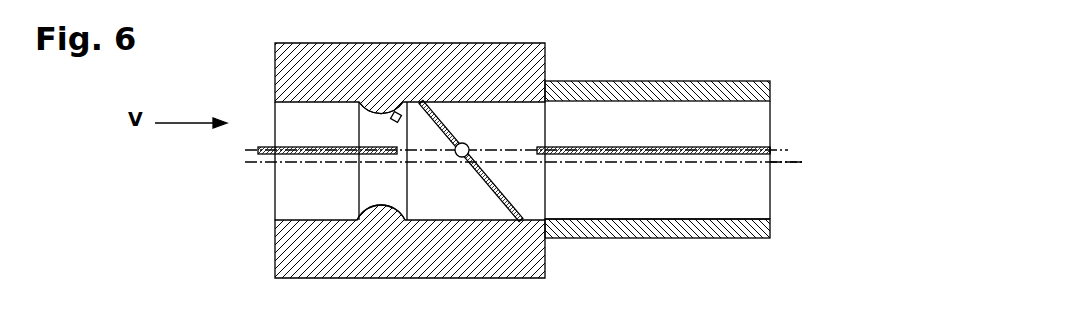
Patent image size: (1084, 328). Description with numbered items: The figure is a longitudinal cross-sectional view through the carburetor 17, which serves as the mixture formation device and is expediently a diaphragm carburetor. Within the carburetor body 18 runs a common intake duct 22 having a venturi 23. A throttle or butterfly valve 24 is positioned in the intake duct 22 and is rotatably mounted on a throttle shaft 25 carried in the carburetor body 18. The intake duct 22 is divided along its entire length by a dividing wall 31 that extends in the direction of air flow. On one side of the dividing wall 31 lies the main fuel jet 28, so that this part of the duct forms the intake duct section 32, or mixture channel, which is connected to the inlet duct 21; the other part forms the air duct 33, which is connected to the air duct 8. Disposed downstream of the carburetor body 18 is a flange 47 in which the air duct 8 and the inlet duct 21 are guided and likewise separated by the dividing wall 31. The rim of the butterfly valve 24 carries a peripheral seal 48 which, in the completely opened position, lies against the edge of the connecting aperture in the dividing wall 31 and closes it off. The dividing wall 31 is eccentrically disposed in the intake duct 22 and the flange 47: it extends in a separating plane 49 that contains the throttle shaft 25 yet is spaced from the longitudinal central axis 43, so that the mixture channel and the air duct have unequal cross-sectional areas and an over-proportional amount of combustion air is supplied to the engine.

The air duct 8 is at (732, 200).
The carburetor 17 is at (258, 262).
The carburetor body 18 is at (480, 262).
The inlet duct 21 is at (727, 117).
The intake duct 22 is at (275, 216).
The venturi 23 is at (387, 218).
The butterfly valve 24 is at (455, 143).
The throttle shaft 25 is at (467, 145).
The main fuel jet 28 is at (390, 110).
The dividing wall 31 is at (320, 147).
The intake duct section 32 is at (313, 135).
The air duct 33 is at (315, 207).
The longitudinal center line 43 is at (790, 163).
The flange 47 is at (669, 236).
The peripheral seal 48 is at (425, 103).
The separating plane 49 is at (776, 149).